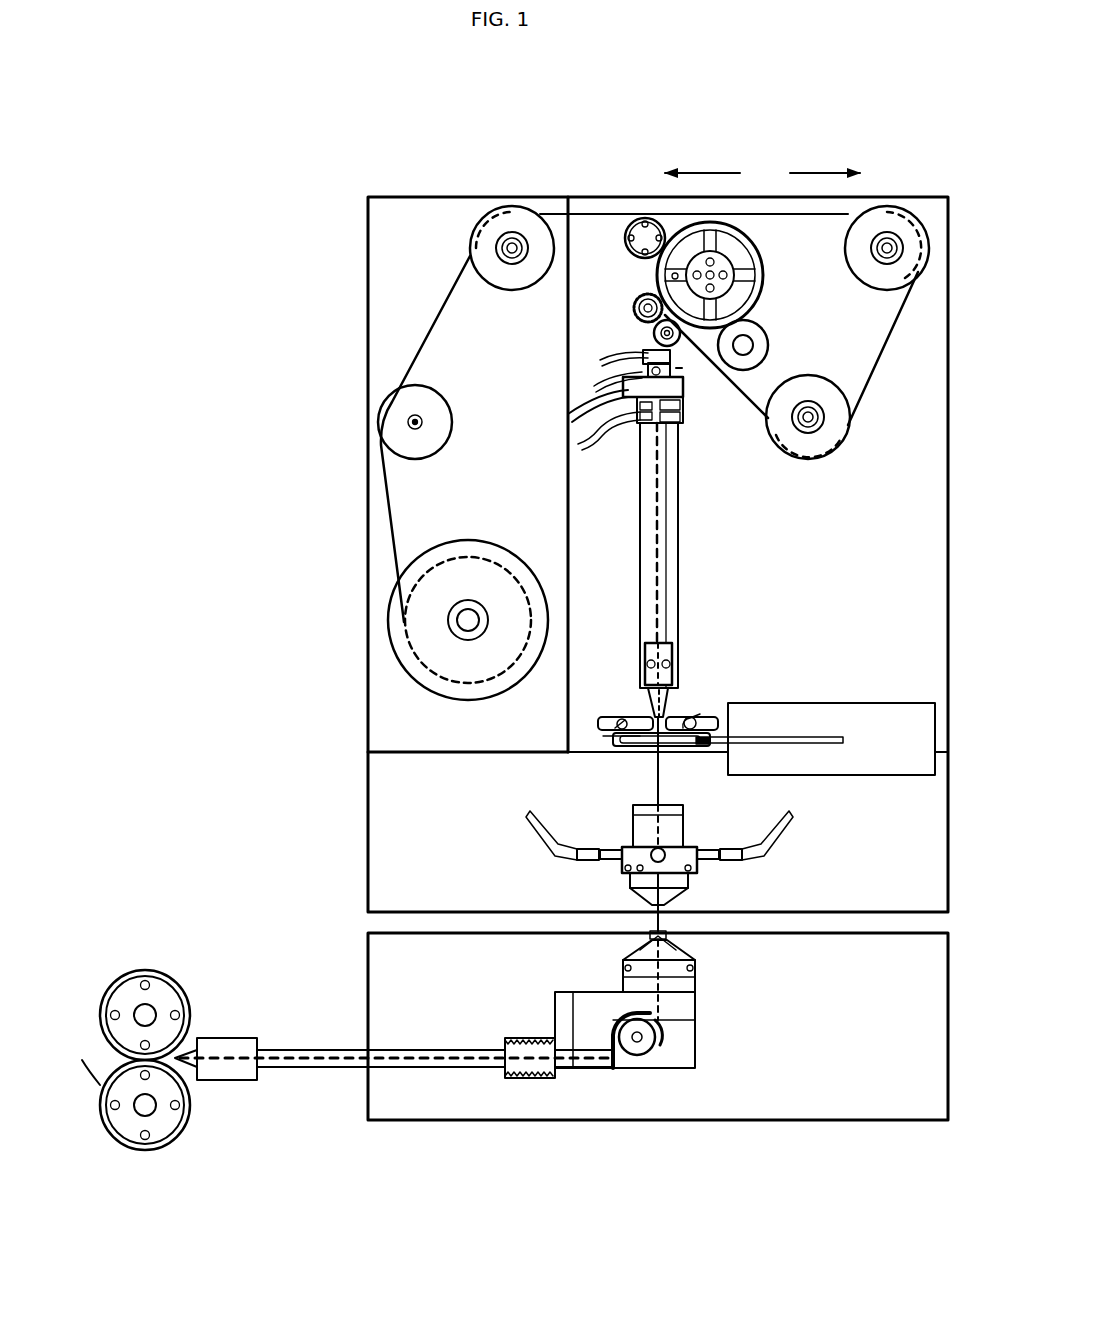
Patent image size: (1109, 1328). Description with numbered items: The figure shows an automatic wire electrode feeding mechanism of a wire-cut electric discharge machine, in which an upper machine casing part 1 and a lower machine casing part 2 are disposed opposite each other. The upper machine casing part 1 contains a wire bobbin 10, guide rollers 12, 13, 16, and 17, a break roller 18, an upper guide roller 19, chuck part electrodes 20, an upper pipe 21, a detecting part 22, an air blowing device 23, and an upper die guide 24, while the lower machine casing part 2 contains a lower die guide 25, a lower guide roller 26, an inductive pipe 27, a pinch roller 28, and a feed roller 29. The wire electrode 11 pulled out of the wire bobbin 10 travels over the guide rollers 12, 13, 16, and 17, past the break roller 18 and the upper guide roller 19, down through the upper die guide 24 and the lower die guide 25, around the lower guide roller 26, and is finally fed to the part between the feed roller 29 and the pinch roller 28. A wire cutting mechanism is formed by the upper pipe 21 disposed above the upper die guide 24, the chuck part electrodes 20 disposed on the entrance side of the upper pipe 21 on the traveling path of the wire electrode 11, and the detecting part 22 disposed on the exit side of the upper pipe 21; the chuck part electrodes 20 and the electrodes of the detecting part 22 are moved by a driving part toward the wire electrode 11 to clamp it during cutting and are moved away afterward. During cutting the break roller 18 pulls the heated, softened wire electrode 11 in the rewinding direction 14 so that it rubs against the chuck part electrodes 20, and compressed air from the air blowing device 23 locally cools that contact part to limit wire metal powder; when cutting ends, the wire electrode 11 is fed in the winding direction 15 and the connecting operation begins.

The upper machine casing part 1 is at (886, 195).
The lower machine casing part 2 is at (528, 1123).
The wire bobbin 10 is at (390, 652).
The wire electrode 11 is at (392, 492).
The guide roller 12 is at (378, 413).
The guide roller 13 is at (477, 222).
The rewinding direction 14 is at (710, 170).
The winding direction 15 is at (815, 170).
The guide roller 16 is at (864, 288).
The guide roller 17 is at (830, 455).
The break roller 18 is at (770, 282).
The upper guide roller 19 is at (683, 347).
The chuck part electrodes 20 is at (668, 385).
The upper pipe 21 is at (667, 492).
The detecting part 22 is at (679, 710).
The air blowing device 23 is at (610, 402).
The upper die guide 24 is at (699, 895).
The lower die guide 25 is at (620, 962).
The lower guide roller 26 is at (662, 1050).
The inductive pipe 27 is at (390, 1047).
The pinch roller 28 is at (176, 975).
The feed roller 29 is at (176, 1152).